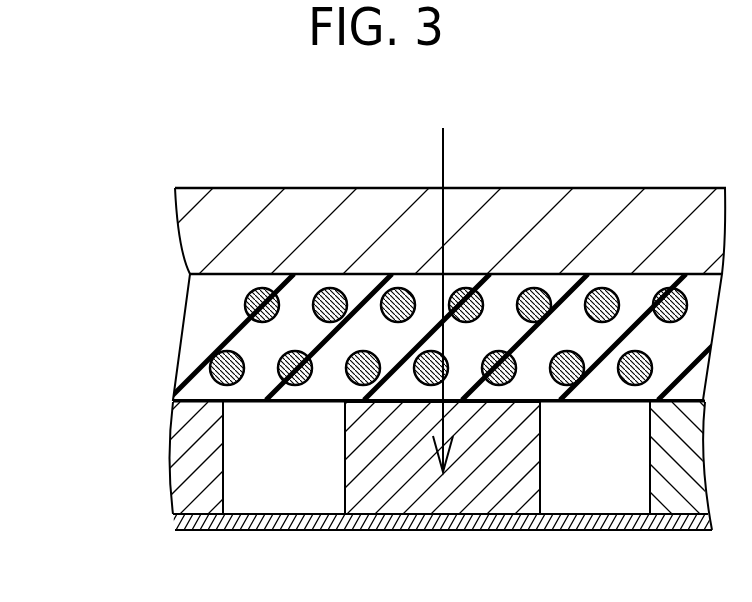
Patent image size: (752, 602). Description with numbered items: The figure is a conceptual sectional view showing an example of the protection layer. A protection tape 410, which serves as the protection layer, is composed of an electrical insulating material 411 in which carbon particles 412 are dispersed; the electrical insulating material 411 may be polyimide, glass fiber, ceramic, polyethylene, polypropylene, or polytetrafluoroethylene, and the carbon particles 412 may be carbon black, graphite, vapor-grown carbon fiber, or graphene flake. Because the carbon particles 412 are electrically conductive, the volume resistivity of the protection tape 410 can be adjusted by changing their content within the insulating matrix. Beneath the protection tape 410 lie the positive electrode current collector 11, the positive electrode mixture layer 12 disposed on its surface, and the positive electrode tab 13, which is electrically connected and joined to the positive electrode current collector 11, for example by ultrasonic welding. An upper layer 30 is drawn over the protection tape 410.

The upper layer 30 is at (302, 222).
The protection tape 410 is at (386, 337).
The electrical insulating material 411 is at (213, 309).
The carbon particles 412 is at (222, 368).
The positive electrode current collector 11 is at (577, 518).
The positive electrode mixture layer 12 is at (207, 487).
The positive electrode tab 13 is at (402, 490).